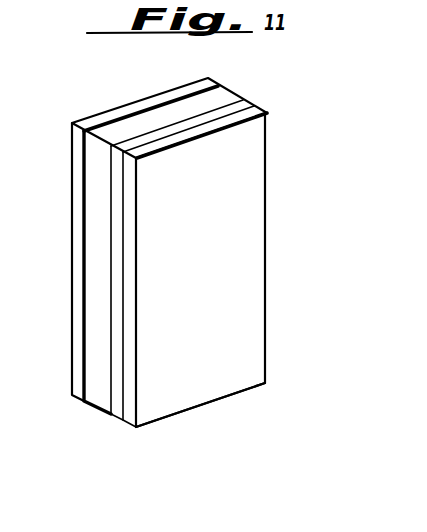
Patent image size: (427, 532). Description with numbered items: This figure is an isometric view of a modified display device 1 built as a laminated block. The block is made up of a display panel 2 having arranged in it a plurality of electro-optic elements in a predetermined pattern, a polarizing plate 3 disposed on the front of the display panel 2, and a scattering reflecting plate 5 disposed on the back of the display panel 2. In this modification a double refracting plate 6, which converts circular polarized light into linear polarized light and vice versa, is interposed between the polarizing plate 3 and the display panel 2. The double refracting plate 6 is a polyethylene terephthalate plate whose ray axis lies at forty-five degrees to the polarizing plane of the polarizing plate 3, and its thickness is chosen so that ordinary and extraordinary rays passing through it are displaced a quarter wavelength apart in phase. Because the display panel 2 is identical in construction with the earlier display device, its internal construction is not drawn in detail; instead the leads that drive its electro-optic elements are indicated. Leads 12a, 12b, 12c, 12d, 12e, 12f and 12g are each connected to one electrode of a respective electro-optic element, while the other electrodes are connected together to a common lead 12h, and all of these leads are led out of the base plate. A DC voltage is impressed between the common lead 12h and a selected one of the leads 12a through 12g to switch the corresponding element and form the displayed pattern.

The display device 1 is at (243, 390).
The display panel 2 is at (98, 412).
The polarizing plate 3 is at (130, 425).
The scattering reflecting plate 5 is at (72, 397).
The double refracting plate 6 is at (112, 415).
The lead 12a is at (168, 112).
The lead 12b is at (92, 233).
The lead 12c is at (265, 170).
The lead 12d is at (265, 218).
The lead 12e is at (95, 317).
The lead 12f is at (265, 260).
The lead 12g is at (167, 418).
The common lead 12h is at (93, 275).